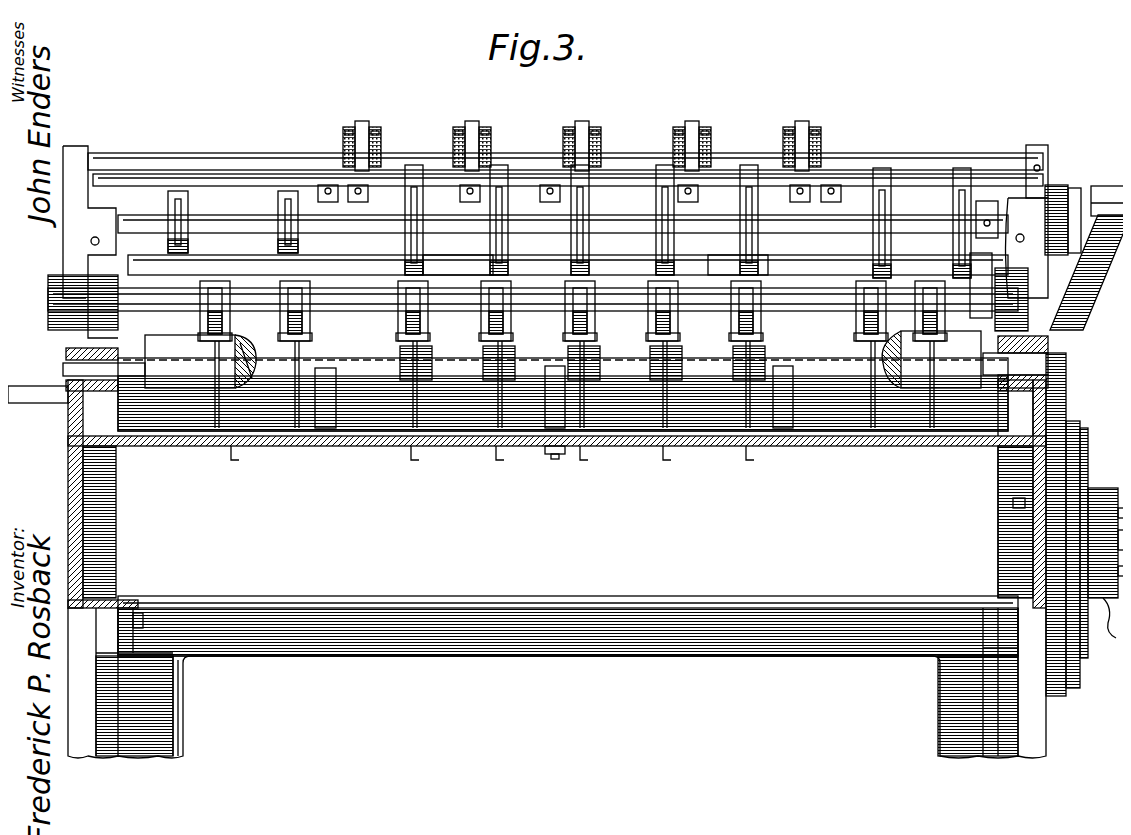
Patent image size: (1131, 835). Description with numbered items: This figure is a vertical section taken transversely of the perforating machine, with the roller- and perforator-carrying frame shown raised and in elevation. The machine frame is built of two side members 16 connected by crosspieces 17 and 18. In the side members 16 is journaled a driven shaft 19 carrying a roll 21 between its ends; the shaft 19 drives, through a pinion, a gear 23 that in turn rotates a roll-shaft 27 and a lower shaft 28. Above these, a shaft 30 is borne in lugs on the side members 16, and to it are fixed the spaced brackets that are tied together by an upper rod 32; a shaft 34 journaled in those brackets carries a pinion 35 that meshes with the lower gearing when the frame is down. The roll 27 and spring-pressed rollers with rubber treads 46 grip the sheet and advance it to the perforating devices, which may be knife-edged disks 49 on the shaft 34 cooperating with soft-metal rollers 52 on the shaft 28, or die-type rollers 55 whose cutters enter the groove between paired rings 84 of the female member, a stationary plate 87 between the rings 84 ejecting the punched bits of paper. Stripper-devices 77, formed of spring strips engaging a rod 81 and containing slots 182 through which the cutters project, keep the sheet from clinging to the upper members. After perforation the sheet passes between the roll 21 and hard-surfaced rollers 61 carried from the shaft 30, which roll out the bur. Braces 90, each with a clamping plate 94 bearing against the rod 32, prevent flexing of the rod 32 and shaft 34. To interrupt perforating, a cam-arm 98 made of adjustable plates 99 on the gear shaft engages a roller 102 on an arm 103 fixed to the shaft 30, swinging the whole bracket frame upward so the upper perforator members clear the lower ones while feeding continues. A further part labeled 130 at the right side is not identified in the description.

The side members 16 is at (100, 582).
The crosspiece 17 is at (445, 650).
The crosspiece 18 is at (517, 440).
The shaft 19 is at (30, 380).
The roll 21 is at (372, 408).
The gear 23 is at (1045, 415).
The roll-shaft 27 is at (563, 359).
The shaft 28 is at (1060, 355).
The shaft 30 is at (703, 296).
The upper rod 32 is at (258, 150).
The shaft 34 is at (235, 198).
The pinion 35 is at (1045, 190).
The rubber treads 46 is at (568, 115).
The disks 49 is at (160, 195).
The rollers 52 is at (848, 352).
The roller 55 is at (478, 236).
The hard-surfaced rollers 61 is at (400, 297).
The stripper-devices 77 is at (405, 170).
The rod 81 is at (708, 256).
The rings 84 is at (480, 377).
The plate 87 is at (215, 394).
The braces 90 is at (312, 246).
The clamping plate 94 is at (322, 150).
The cam-arm 98 is at (1113, 626).
The plates 99 is at (1082, 480).
The roller 102 is at (1107, 190).
The arm 103 is at (1108, 255).
The gear 130 is at (1060, 668).
The slots 182 is at (575, 198).